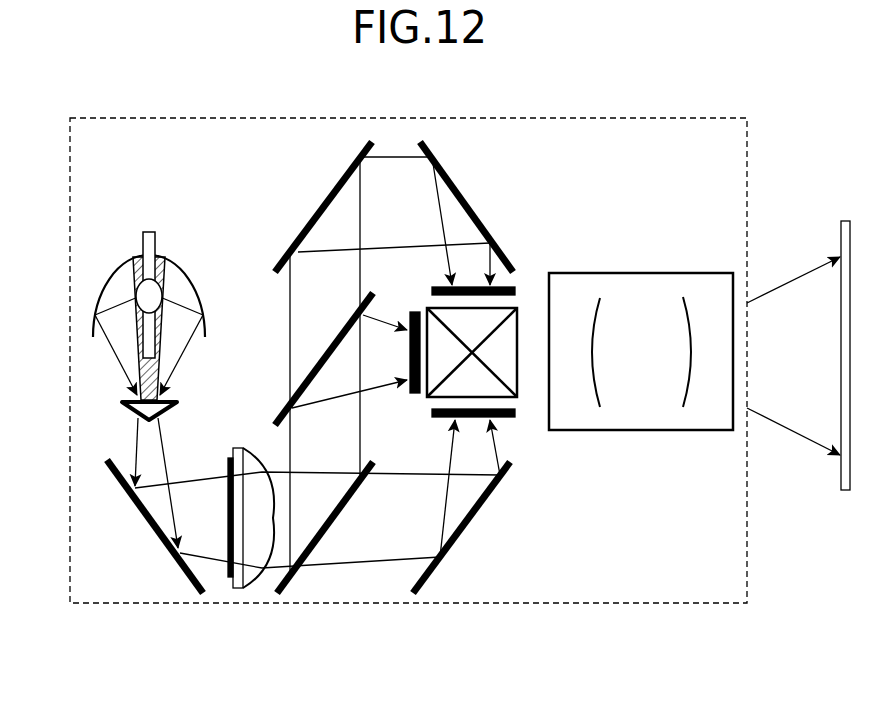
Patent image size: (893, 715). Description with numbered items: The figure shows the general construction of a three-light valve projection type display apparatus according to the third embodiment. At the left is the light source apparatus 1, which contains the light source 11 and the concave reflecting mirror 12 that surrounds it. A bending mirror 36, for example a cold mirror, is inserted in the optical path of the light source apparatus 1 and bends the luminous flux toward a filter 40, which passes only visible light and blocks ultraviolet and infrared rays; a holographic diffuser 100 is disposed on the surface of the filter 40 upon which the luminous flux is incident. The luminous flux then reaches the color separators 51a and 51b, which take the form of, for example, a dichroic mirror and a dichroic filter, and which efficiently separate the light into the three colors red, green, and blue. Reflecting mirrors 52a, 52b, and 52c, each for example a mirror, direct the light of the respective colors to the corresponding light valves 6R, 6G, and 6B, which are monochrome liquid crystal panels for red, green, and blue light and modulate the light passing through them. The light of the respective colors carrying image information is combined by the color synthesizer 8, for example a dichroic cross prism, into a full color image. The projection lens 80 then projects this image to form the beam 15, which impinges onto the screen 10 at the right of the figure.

The light source apparatus 1 is at (40, 232).
The screen 10 is at (840, 220).
The light source 11 is at (147, 232).
The concave reflecting mirror 12 is at (180, 265).
The beam 15 is at (812, 440).
The bending mirror 36 is at (152, 533).
The filter 40 is at (237, 590).
The holographic diffuser 100 is at (227, 480).
The color separator 51a is at (322, 533).
The color separator 51b is at (343, 333).
The reflecting mirror 52a is at (482, 507).
The reflecting mirror 52b is at (327, 202).
The reflecting mirror 52c is at (465, 197).
The light valve 6B is at (515, 287).
The light valve 6G is at (415, 310).
The light valve 6R is at (518, 418).
The color synthesizer 8 is at (437, 398).
The projection lens 80 is at (693, 432).